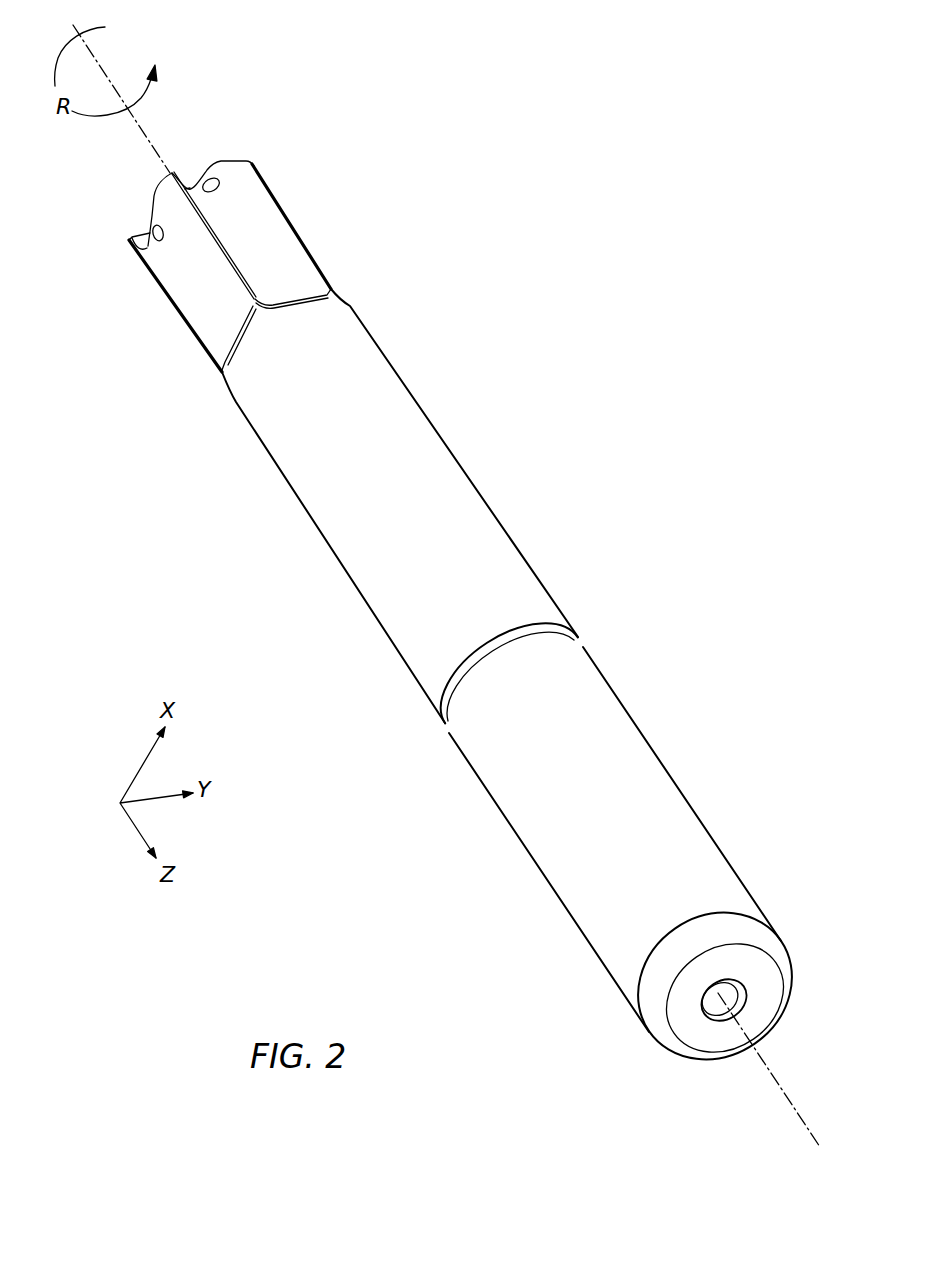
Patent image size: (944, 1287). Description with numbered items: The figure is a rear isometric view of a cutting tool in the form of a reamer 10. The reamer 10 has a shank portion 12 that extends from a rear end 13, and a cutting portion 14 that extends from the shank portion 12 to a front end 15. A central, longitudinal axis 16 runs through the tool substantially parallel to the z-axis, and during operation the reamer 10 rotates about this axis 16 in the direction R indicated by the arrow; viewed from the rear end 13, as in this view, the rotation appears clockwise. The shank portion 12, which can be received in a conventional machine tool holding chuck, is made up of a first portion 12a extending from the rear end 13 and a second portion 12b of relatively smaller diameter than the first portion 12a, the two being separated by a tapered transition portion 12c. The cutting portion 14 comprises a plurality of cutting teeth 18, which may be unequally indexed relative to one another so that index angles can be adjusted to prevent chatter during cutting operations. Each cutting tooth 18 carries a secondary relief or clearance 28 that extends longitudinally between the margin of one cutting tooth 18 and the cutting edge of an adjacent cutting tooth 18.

The reamer 10 is at (471, 588).
The shank portion 12 is at (472, 588).
The first portion 12a is at (656, 868).
The second portion 12b is at (303, 455).
The tapered transition portion 12c is at (455, 652).
The rear end 13 is at (770, 1022).
The cutting portion 14 is at (235, 204).
The front end 15 is at (189, 172).
The central, longitudinal axis 16 is at (788, 1092).
The cutting teeth 18 is at (233, 152).
The secondary relief or clearance 28 is at (283, 266).